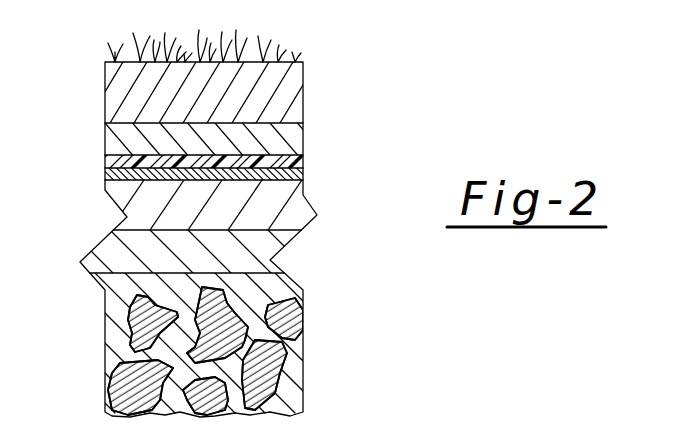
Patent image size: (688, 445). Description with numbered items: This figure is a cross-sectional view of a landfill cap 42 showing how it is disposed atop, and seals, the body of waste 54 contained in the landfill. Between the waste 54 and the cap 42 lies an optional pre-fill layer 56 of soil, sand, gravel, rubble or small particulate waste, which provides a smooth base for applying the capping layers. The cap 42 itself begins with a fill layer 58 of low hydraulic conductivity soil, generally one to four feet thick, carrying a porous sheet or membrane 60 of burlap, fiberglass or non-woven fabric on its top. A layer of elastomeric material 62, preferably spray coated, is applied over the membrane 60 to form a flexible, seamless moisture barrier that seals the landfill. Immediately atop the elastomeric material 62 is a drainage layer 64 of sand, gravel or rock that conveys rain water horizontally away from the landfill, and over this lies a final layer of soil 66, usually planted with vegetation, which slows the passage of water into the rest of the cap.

The cap 42 is at (95, 63).
The body of waste 54 is at (290, 363).
The pre-fill layer 56 is at (265, 260).
The fill layer 58 is at (298, 217).
The porous membrane 60 is at (290, 176).
The layer of elastomeric material 62 is at (290, 162).
The drainage layer 64 is at (278, 142).
The final layer of soil 66 is at (282, 84).